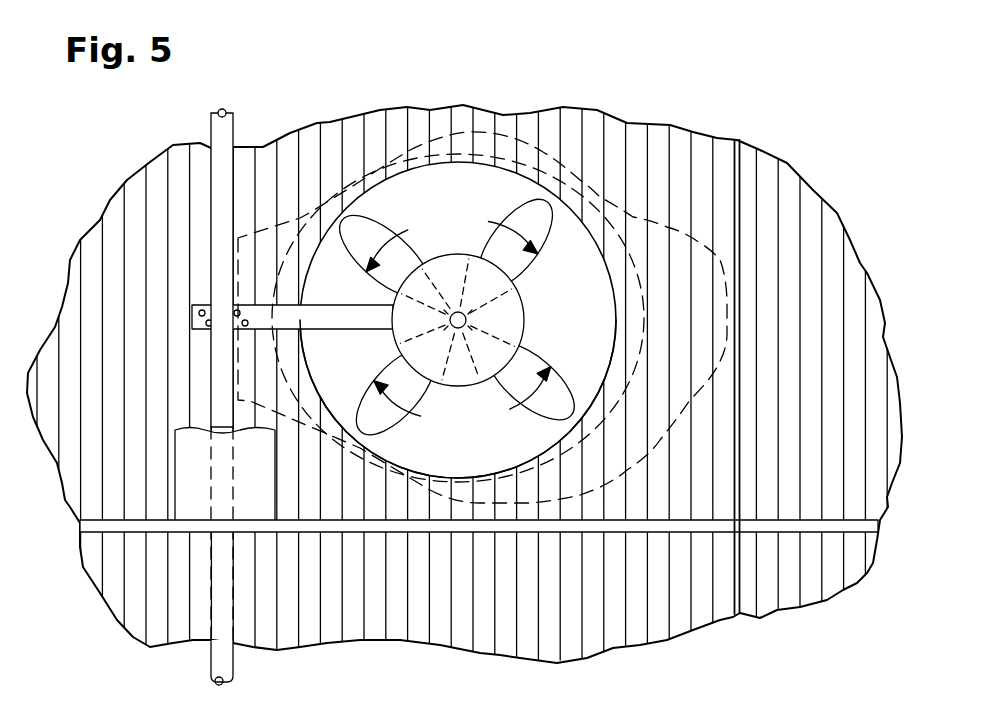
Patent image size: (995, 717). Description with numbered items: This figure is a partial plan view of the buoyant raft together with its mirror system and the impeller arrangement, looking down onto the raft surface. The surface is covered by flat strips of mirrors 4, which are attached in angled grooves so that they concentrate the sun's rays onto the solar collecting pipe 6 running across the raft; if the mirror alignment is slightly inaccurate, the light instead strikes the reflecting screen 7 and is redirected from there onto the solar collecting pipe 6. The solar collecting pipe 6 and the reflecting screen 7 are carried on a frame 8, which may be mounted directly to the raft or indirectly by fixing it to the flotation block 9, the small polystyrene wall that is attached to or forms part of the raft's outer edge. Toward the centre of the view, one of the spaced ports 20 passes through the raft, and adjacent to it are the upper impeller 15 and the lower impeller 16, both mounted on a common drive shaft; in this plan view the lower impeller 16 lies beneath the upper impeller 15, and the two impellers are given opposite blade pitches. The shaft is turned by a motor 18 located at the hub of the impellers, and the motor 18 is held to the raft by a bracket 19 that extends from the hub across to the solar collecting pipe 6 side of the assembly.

The mirrors 4 is at (307, 147).
The solar collecting pipe 6 is at (230, 123).
The reflecting screen 7 is at (255, 628).
The frame 8 is at (88, 535).
The flotation block 9 is at (724, 605).
The upper impeller 15 is at (523, 203).
The lower impeller 16 is at (496, 477).
The motor 18 is at (456, 253).
The bracket 19 is at (335, 304).
The port 20 is at (495, 477).